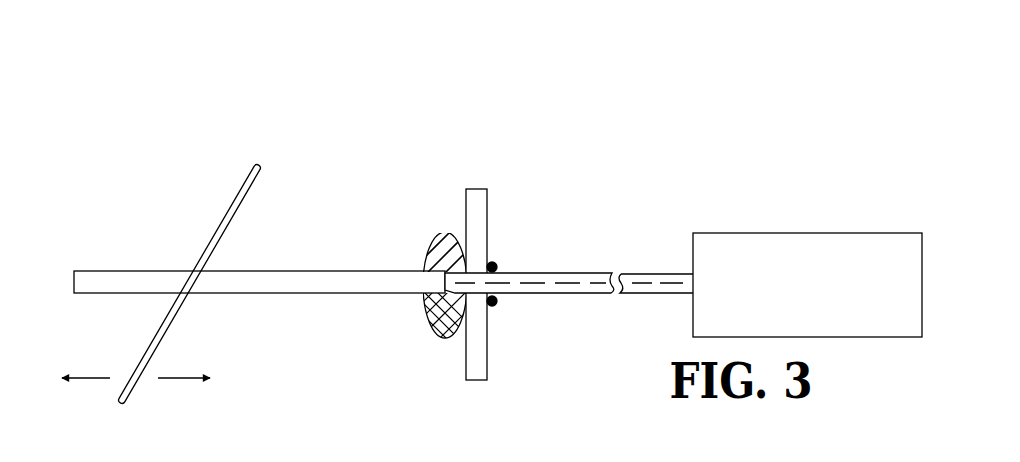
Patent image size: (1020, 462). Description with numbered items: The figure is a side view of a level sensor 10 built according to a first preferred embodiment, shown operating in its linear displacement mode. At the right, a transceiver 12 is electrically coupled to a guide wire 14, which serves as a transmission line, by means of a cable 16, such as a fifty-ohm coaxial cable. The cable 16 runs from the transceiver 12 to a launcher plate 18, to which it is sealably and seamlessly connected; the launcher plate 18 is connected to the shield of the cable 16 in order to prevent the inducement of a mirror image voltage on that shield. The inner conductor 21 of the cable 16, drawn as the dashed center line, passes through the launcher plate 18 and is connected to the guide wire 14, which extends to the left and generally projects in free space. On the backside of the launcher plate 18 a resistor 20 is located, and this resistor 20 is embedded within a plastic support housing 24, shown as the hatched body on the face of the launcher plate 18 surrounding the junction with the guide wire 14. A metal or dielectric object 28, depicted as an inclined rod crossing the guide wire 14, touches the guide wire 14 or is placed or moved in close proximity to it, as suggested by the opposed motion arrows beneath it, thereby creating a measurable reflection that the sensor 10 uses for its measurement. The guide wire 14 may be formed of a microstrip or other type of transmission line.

The level sensor 10 is at (592, 86).
The transceiver 12 is at (787, 242).
The guide wire 14 is at (305, 283).
The cable 16 is at (669, 273).
The launcher plate 18 is at (477, 210).
The resistor 20 is at (443, 327).
The inner conductor 21 is at (550, 283).
The plastic support housing 24 is at (443, 242).
The object 28 is at (243, 187).